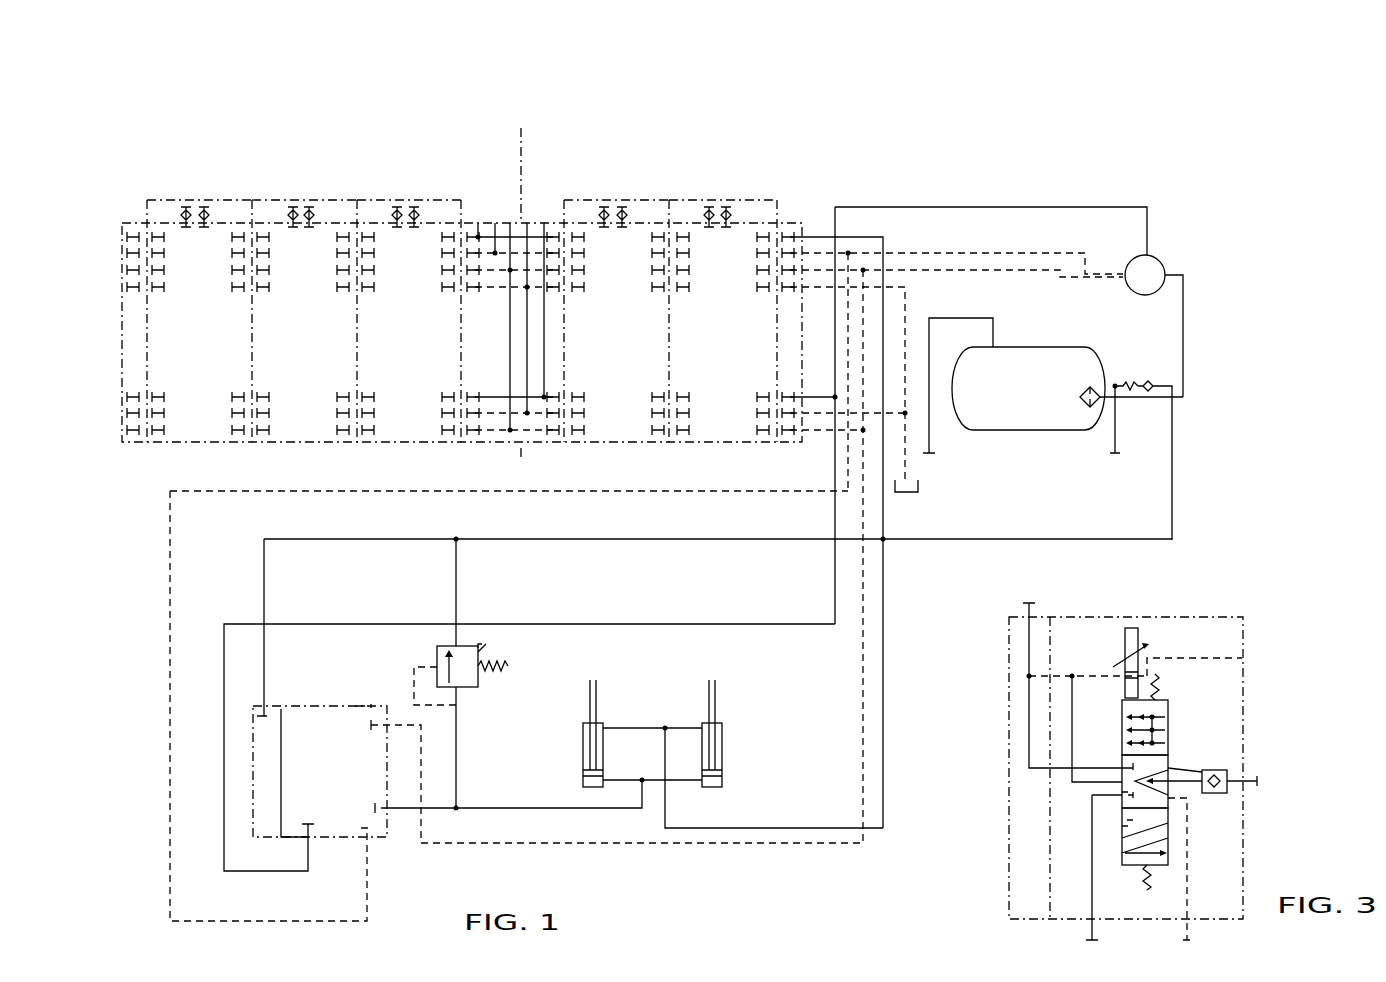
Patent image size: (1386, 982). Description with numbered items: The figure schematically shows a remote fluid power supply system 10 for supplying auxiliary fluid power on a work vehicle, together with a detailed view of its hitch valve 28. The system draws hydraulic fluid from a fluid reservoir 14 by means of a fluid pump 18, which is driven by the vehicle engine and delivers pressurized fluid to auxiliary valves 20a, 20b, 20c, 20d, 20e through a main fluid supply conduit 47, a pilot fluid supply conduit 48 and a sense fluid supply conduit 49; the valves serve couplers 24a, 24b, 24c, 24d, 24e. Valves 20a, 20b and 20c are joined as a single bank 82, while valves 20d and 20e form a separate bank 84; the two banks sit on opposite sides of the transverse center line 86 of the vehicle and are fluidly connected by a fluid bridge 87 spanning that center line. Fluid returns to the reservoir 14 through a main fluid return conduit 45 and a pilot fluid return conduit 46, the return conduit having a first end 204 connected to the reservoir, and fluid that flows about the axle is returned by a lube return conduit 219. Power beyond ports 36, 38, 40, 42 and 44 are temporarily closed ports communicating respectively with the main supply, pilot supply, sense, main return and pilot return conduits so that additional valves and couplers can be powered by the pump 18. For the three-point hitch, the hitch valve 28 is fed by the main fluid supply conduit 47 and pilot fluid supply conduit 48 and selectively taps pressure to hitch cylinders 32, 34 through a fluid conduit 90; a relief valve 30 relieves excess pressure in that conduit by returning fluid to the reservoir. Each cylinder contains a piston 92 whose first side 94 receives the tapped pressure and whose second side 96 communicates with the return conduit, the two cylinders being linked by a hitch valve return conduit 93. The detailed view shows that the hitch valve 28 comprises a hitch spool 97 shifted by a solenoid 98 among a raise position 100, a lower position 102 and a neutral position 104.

In FIG. 1, the remote fluid power supply system 10 is at (160, 191).
In FIG. 1, the bank 82 is at (121, 241).
In FIG. 1, the coupler 24a is at (226, 200).
In FIG. 1, the coupler 24b is at (335, 200).
In FIG. 1, the coupler 24c is at (431, 200).
In FIG. 1, the coupler 24d is at (645, 200).
In FIG. 1, the coupler 24e is at (752, 200).
In FIG. 1, the auxiliary valve 20a is at (217, 350).
In FIG. 1, the auxiliary valve 20b is at (330, 350).
In FIG. 1, the auxiliary valve 20c is at (440, 350).
In FIG. 1, the auxiliary valve 20d is at (637, 350).
In FIG. 1, the auxiliary valve 20e is at (753, 350).
In FIG. 1, the power beyond port 38 is at (478, 222).
In FIG. 1, the power beyond port 40 is at (495, 222).
In FIG. 1, the power beyond port 42 is at (510, 222).
In FIG. 1, the power beyond port 44 is at (527, 222).
In FIG. 1, the power beyond port 36 is at (544, 222).
In FIG. 1, the transverse center line 86 is at (521, 146).
In FIG. 1, the fluid bridge 87 is at (553, 222).
In FIG. 1, the bank 84 is at (777, 221).
In FIG. 1, the main fluid supply conduit 47 is at (1012, 207).
In FIG. 3, the main fluid supply conduit 47 is at (1097, 928).
In FIG. 1, the sense fluid supply conduit 49 is at (1043, 252).
In FIG. 3, the sense fluid supply conduit 49 is at (1193, 938).
In FIG. 1, the fluid pump 18 is at (1128, 257).
In FIG. 1, the pilot fluid supply conduit 48 is at (1040, 272).
In FIG. 3, the pilot fluid supply conduit 48 is at (1252, 655).
In FIG. 1, the pilot fluid return conduit 46 is at (907, 297).
In FIG. 1, the fluid reservoir 14 is at (1065, 347).
In FIG. 1, the first end 204 is at (1163, 382).
In FIG. 1, the lube return conduit 219 is at (1117, 435).
In FIG. 1, the main fluid return conduit 45 is at (987, 538).
In FIG. 3, the main fluid return conduit 45 is at (1048, 603).
In FIG. 1, the hitch valve 28 is at (321, 706).
In FIG. 3, the hitch valve 28 is at (1253, 613).
In FIG. 1, the relief valve 30 is at (437, 648).
In FIG. 1, the fluid conduit 90 is at (494, 807).
In FIG. 3, the fluid conduit 90 is at (1255, 780).
In FIG. 1, the second side 96 is at (582, 750).
In FIG. 1, the hitch cylinder 32 is at (600, 722).
In FIG. 1, the hitch cylinder 34 is at (718, 722).
In FIG. 1, the hitch valve return conduit 93 is at (648, 728).
In FIG. 1, the piston 92 is at (605, 772).
In FIG. 1, the first side 94 is at (583, 785).
In FIG. 3, the solenoid 98 is at (1125, 647).
In FIG. 3, the hitch spool 97 is at (1170, 723).
In FIG. 3, the raise position 100 is at (1123, 750).
In FIG. 3, the neutral position 104 is at (1168, 765).
In FIG. 3, the lower position 102 is at (1123, 843).